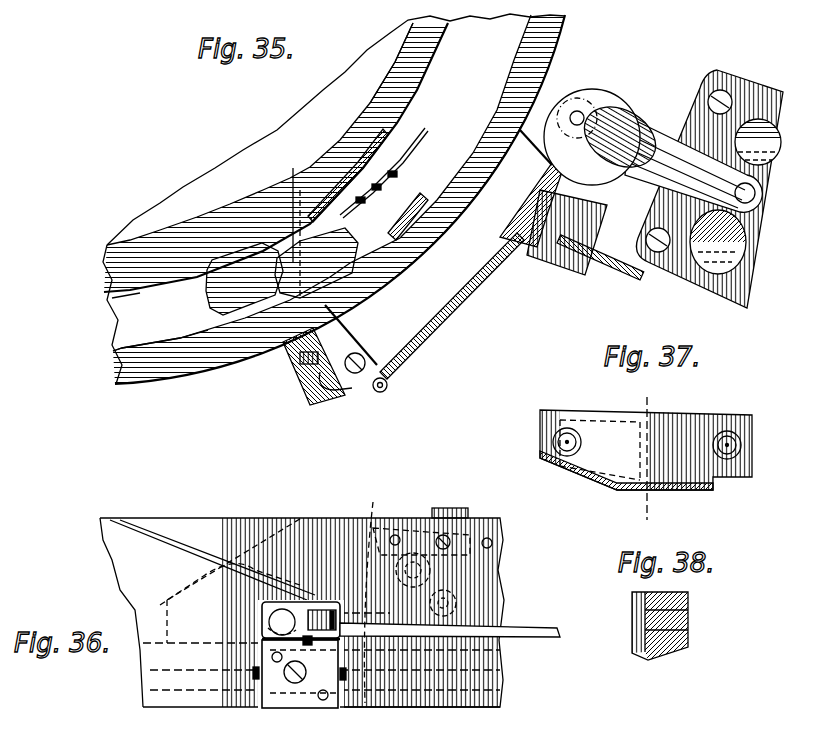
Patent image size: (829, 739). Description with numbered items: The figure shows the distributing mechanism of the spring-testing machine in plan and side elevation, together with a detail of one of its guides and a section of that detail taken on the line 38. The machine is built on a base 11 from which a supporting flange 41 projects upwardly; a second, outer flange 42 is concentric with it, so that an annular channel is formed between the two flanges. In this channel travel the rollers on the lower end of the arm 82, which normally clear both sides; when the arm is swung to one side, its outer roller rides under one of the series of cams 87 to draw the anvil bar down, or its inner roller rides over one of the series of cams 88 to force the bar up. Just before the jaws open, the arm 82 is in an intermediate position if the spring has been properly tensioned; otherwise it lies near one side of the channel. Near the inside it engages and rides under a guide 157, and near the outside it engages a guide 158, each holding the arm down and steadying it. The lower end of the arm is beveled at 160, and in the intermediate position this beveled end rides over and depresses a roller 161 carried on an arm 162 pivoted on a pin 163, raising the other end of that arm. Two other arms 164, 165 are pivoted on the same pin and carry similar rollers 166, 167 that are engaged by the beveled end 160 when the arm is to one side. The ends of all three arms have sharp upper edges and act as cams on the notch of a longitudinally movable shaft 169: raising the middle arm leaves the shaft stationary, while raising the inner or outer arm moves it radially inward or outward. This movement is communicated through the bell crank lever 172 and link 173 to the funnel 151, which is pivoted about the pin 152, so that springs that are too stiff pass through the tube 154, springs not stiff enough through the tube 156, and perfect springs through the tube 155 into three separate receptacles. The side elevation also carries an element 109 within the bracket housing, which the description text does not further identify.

In FIG. 35, the base 11 is at (172, 203).
In FIG. 36, the base 11 is at (182, 698).
In FIG. 35, the supporting flange 41 is at (390, 87).
In FIG. 35, the outer flange 42 is at (181, 366).
In FIG. 36, the outer flange 42 is at (190, 525).
In FIG. 35, the cams 87 is at (140, 347).
In FIG. 36, the cams 87 is at (148, 535).
In FIG. 35, the cams 88 is at (138, 295).
In FIG. 36, the cams 88 is at (187, 587).
In FIG. 35, the guide 157 is at (372, 157).
In FIG. 37, the guide 157 is at (702, 415).
In FIG. 38, the guide 157 is at (688, 600).
In FIG. 35, the arm 165 is at (273, 240).
In FIG. 35, the arm 164 is at (300, 333).
In FIG. 35, the arm 162 is at (288, 262).
In FIG. 36, the arm 162 is at (374, 593).
In FIG. 35, the roller 167 is at (413, 144).
In FIG. 35, the roller 161 is at (370, 188).
In FIG. 36, the roller 161 is at (456, 603).
In FIG. 35, the roller 166 is at (397, 200).
In FIG. 35, the guide 158 is at (423, 223).
In FIG. 35, the pin 163 is at (380, 267).
In FIG. 36, the pin 163 is at (365, 708).
In FIG. 35, the bell crank lever 172 is at (377, 363).
In FIG. 36, the bell crank lever 172 is at (303, 605).
In FIG. 35, the link 173 is at (437, 334).
In FIG. 36, the link 173 is at (537, 633).
In FIG. 35, the longitudinally movable shaft 169 is at (310, 372).
In FIG. 35, the tube 155 is at (767, 260).
In FIG. 35, the tube 154 is at (753, 127).
In FIG. 35, the tube 156 is at (717, 250).
In FIG. 35, the funnel 151 is at (630, 126).
In FIG. 35, the pin 152 is at (578, 111).
In FIG. 36, the ball 109 is at (268, 623).
In FIG. 36, the beveled end 160 is at (430, 575).
In FIG. 36, the arm 82 is at (462, 507).
In FIG. 37, the gear 38 is at (647, 509).